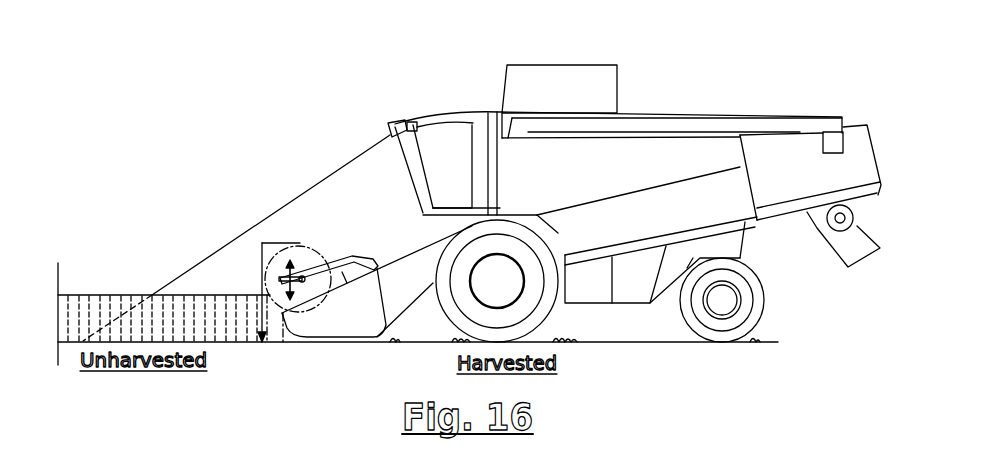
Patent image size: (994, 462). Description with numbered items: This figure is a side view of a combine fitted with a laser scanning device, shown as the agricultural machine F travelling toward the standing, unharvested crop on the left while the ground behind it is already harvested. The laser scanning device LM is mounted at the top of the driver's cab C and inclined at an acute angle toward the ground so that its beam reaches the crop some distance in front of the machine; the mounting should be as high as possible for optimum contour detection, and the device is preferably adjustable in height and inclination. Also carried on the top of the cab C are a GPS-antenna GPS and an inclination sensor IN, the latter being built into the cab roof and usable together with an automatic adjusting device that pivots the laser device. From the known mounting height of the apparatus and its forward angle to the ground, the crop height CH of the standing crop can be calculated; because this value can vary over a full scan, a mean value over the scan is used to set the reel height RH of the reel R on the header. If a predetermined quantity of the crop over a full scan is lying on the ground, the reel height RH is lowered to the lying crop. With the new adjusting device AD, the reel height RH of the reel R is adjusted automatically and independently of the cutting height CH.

The GPS-antenna GPS is at (392, 118).
The inclination sensor IN is at (413, 121).
The driver's cab C is at (443, 140).
The laser scanning device LM is at (388, 135).
The forager F is at (675, 28).
The reel R is at (312, 246).
The adjusting device AD is at (355, 258).
The reel height RH is at (261, 292).
The crop height CH is at (60, 292).